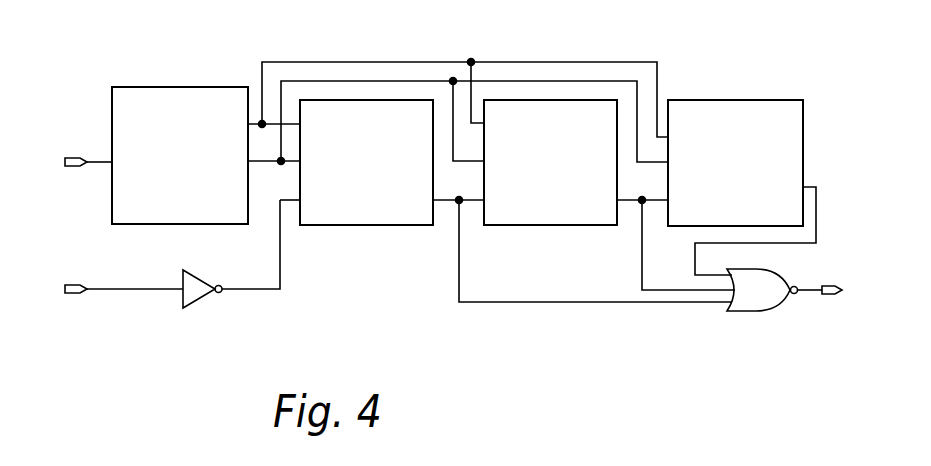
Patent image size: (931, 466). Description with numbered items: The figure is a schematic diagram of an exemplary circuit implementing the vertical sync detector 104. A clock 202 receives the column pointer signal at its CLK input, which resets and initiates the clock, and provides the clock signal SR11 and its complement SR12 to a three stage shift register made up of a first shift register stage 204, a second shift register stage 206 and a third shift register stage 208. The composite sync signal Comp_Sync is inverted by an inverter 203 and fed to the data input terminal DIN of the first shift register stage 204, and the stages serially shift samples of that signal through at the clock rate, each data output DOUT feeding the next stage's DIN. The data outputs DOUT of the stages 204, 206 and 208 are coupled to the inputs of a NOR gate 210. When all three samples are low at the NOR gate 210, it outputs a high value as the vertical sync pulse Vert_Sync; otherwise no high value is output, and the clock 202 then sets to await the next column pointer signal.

The vertical sync detector 104 is at (620, 326).
The clock 202 is at (163, 97).
The inverter 203 is at (197, 295).
The first shift register stage 204 is at (348, 227).
The second shift register stage 206 is at (532, 228).
The third shift register stage 208 is at (797, 127).
The NOR gate 210 is at (768, 300).